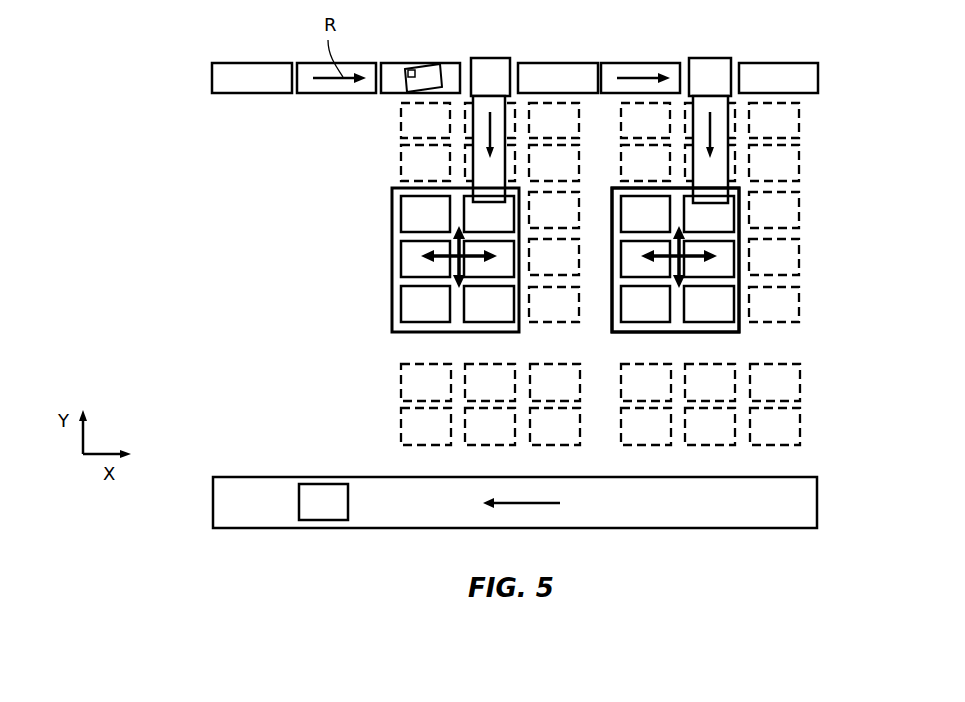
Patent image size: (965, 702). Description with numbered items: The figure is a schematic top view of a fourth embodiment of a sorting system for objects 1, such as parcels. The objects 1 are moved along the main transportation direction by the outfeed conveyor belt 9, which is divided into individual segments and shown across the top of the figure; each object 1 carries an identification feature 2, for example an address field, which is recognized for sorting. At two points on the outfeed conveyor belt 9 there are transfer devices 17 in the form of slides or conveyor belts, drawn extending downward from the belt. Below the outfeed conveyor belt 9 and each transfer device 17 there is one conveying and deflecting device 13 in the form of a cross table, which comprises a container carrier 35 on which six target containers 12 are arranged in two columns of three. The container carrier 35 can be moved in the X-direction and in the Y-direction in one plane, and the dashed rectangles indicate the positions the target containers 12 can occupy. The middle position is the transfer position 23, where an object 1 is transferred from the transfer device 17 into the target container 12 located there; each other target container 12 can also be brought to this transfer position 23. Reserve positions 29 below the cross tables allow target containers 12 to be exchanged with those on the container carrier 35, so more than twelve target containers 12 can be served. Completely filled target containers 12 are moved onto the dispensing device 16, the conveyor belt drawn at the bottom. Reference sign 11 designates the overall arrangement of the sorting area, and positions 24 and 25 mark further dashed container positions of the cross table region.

The object 1 is at (432, 63).
The identification feature 2 is at (410, 72).
The outfeed conveyor belt 9 is at (228, 78).
The processing system 11 is at (845, 262).
The target container 12 is at (415, 296).
The conveying and deflecting device 13 is at (455, 265).
The dispensing device 16 is at (790, 508).
The transfer device 17 is at (498, 115).
The transfer position 23 is at (481, 212).
The buffer position 24 is at (415, 123).
The processing module 25 is at (387, 175).
The reserve position 29 is at (413, 425).
The container carrier 35 is at (420, 257).